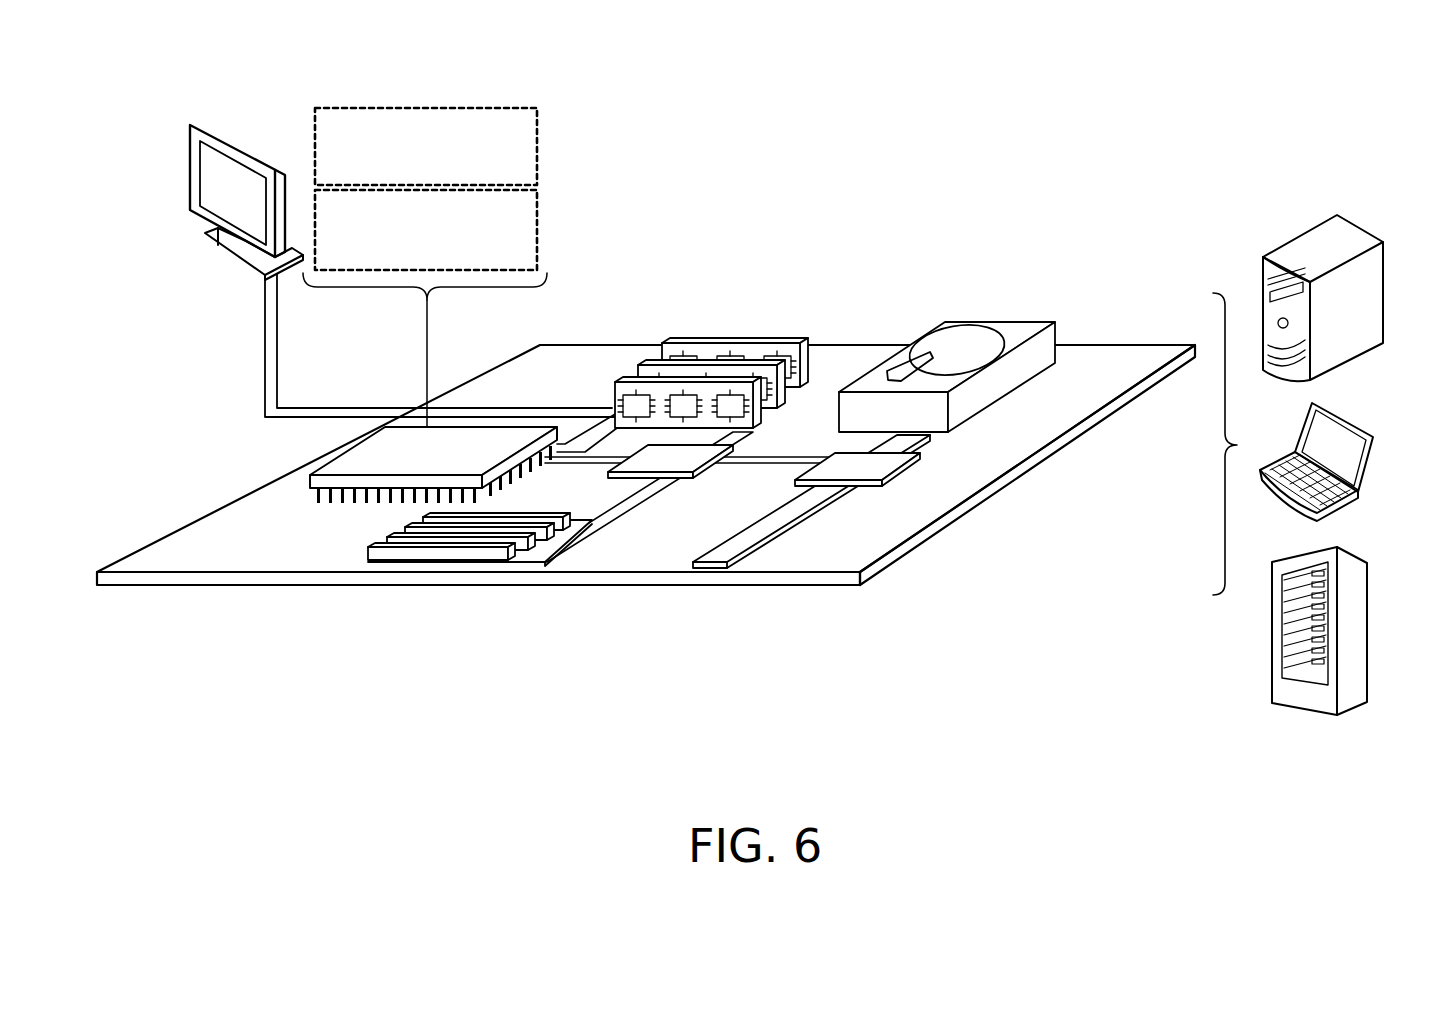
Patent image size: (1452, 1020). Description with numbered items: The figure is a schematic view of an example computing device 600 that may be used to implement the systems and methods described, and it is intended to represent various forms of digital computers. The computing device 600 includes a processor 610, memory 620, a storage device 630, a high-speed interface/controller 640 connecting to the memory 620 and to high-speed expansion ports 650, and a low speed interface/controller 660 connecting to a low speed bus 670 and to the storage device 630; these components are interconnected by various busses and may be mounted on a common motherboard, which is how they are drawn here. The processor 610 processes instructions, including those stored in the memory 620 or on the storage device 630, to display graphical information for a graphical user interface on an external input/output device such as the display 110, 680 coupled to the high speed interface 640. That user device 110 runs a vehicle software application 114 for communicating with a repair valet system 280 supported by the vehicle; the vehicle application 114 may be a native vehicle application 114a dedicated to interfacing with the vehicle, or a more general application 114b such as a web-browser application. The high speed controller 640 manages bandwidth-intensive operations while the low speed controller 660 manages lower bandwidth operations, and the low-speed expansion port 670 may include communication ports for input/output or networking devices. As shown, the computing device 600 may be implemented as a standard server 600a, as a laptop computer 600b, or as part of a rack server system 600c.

The computing device 600 is at (1012, 92).
The user device 110 is at (210, 202).
The display 680 is at (190, 175).
The repair valet system 280 is at (426, 146).
The vehicle software application 114 is at (426, 230).
The native vehicle application 114a is at (426, 230).
The general application 114b is at (426, 230).
The processor 610 is at (308, 478).
The memory 620 is at (728, 343).
The storage device 630 is at (996, 322).
The high-speed interface/controller 640 is at (672, 480).
The high-speed expansion ports 650 is at (368, 549).
The low-speed interface/controller 660 is at (846, 466).
The low-speed bus 670 is at (732, 585).
The standard server 600a is at (1295, 238).
The laptop computer 600b is at (1345, 430).
The rack server system 600c is at (1360, 613).